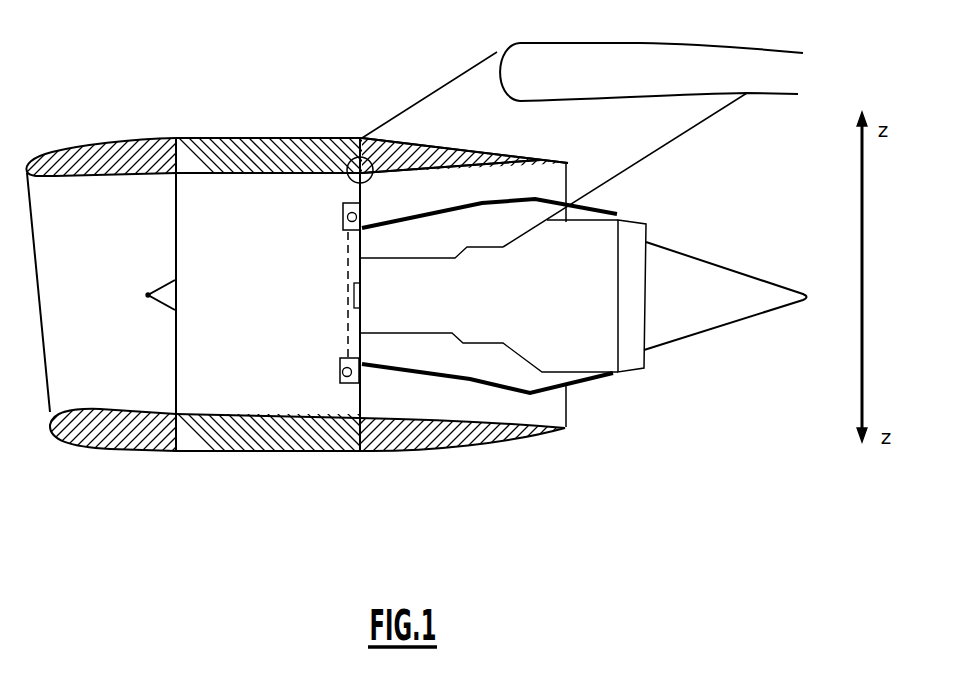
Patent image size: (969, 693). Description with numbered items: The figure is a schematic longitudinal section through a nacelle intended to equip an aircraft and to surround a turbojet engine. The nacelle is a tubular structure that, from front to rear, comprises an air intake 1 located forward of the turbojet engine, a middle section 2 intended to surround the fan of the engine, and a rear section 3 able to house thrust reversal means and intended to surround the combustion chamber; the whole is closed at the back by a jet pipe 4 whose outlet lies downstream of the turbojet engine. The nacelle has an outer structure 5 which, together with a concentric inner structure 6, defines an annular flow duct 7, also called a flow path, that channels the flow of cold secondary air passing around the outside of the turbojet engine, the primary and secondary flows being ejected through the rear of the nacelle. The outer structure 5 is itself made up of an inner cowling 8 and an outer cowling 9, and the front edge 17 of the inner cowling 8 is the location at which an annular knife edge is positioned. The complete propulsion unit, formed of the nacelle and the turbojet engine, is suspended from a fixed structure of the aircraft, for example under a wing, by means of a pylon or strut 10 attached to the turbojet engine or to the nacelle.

The air intake 1 is at (118, 375).
The middle section 2 is at (273, 400).
The rear section 3 is at (460, 328).
The annular flow duct 7 is at (445, 408).
The jet pipe 4 is at (705, 305).
The outer structure 5 is at (402, 148).
The inner structure 6 is at (498, 194).
The inner cowling 8 is at (458, 172).
The outer cowling 9 is at (450, 136).
The pylon 10 is at (672, 110).
The front edge 17 is at (352, 181).